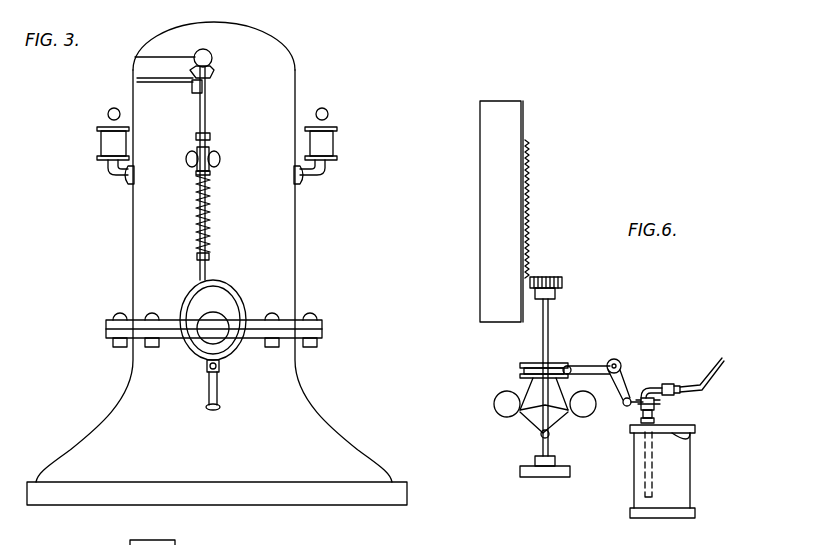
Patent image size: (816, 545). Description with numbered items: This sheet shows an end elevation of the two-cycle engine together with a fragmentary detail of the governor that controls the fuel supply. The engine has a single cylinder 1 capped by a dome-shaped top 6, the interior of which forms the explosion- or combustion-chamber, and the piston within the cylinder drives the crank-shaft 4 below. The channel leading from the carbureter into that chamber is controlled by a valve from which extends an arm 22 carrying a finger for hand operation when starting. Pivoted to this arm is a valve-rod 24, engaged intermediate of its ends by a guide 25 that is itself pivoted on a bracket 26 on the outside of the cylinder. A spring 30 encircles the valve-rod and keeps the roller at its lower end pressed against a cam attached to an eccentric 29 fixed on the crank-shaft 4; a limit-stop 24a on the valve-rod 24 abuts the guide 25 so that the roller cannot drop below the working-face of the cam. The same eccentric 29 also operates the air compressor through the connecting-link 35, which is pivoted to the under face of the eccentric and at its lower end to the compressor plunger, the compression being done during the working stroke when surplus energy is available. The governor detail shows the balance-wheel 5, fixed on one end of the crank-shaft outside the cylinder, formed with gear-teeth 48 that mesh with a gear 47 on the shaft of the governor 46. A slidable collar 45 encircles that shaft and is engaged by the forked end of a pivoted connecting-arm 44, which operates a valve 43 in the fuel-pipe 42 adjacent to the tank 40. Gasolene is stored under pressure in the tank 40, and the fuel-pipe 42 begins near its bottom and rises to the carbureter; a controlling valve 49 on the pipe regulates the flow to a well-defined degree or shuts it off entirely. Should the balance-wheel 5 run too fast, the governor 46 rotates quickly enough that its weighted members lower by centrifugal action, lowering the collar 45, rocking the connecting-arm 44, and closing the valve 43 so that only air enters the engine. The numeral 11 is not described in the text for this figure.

In FIG. 3, the cylinder 1 is at (143, 238).
In FIG. 3, the crank-shaft 4 is at (200, 334).
In FIG. 3, the dome-shaped top 6 is at (268, 40).
In FIG. 3, the base element 11 is at (180, 542).
In FIG. 3, the arm 22 is at (195, 77).
In FIG. 3, the valve-rod 24 is at (210, 97).
In FIG. 3, the limit-stop 24a is at (215, 138).
In FIG. 3, the guide 25 is at (206, 166).
In FIG. 3, the bracket 26 is at (218, 160).
In FIG. 3, the eccentric 29 is at (235, 290).
In FIG. 3, the spring 30 is at (213, 220).
In FIG. 3, the connecting-link 35 is at (218, 388).
In FIG. 6, the balance-wheel 5 is at (485, 186).
In FIG. 6, the tank 40 is at (687, 468).
In FIG. 6, the fuel-pipe 42 is at (714, 372).
In FIG. 6, the valve 43 is at (646, 396).
In FIG. 6, the pivoted connecting-arm 44 is at (625, 364).
In FIG. 6, the slidable collar 45 is at (554, 364).
In FIG. 6, the governor 46 is at (500, 409).
In FIG. 6, the gear 47 is at (563, 283).
In FIG. 6, the gear-teeth 48 is at (531, 202).
In FIG. 6, the controlling valve 49 is at (674, 384).